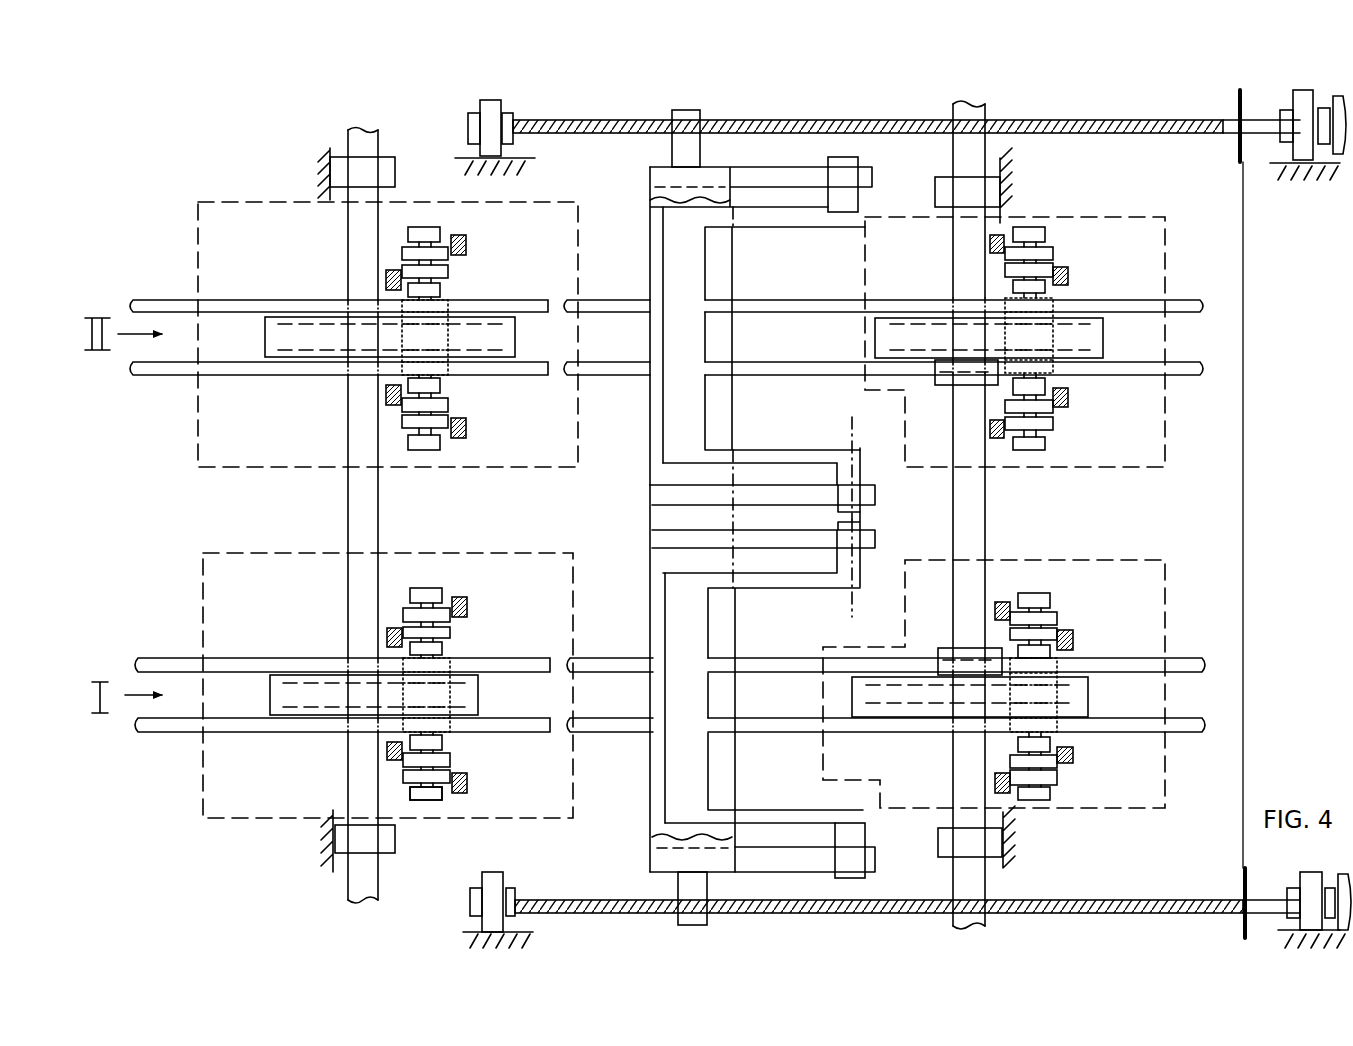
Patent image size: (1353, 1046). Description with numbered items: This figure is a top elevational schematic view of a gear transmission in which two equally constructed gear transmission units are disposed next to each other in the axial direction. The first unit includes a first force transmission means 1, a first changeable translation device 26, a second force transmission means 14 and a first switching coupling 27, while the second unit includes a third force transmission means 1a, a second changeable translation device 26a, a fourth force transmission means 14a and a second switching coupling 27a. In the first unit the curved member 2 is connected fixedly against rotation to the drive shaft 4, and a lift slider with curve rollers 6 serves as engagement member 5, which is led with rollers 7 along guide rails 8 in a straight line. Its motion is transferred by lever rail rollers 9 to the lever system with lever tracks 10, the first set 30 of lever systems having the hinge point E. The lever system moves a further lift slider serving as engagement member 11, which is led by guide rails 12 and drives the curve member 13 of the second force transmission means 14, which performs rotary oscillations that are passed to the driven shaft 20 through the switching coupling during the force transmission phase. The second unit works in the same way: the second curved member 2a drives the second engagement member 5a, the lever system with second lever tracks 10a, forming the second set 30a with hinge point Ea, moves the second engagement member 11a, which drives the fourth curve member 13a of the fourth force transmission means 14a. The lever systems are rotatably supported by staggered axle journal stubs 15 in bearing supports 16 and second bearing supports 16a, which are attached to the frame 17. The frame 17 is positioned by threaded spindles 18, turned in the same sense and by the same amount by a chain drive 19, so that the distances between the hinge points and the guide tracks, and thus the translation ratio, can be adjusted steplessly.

The first force transmission means 1 is at (212, 570).
The third force transmission means 1a is at (222, 443).
The curved member 2 is at (480, 697).
The second curved member 2a is at (516, 338).
The drive shaft 4 is at (355, 508).
The engagement member 5 is at (425, 801).
The second engagement member 5a is at (420, 229).
The curve rollers 6 is at (449, 683).
The rollers 7 is at (443, 778).
The guide rails 8 is at (453, 598).
The lever rail rollers 9 is at (447, 675).
The lever tracks 10 is at (770, 727).
The second lever tracks 10a is at (798, 373).
The engagement member 11 is at (1035, 598).
The second engagement member 11a is at (1027, 232).
The guide rails 12 is at (1068, 763).
The curve member 13 is at (1089, 695).
The fourth curve member 13a is at (1104, 338).
The second force transmission means 14 is at (1145, 580).
The fourth force transmission means 14a is at (1140, 447).
The axle journal stubs 15 is at (857, 218).
The bearing supports 16 is at (780, 537).
The second bearing supports 16a is at (770, 180).
The frame 17 is at (668, 860).
The threaded spindles 18 is at (1095, 900).
The chain drive 19 is at (1235, 142).
The driven shaft 20 is at (978, 523).
The first changeable translation device 26 is at (643, 743).
The second changeable translation device 26a is at (632, 293).
The first switching coupling 27 is at (953, 648).
The second switching coupling 27a is at (940, 380).
The first set of lever systems 30 is at (732, 673).
The second set of lever systems 30a is at (732, 324).
The first hinge point E is at (843, 582).
The second hinge point Ea is at (848, 453).